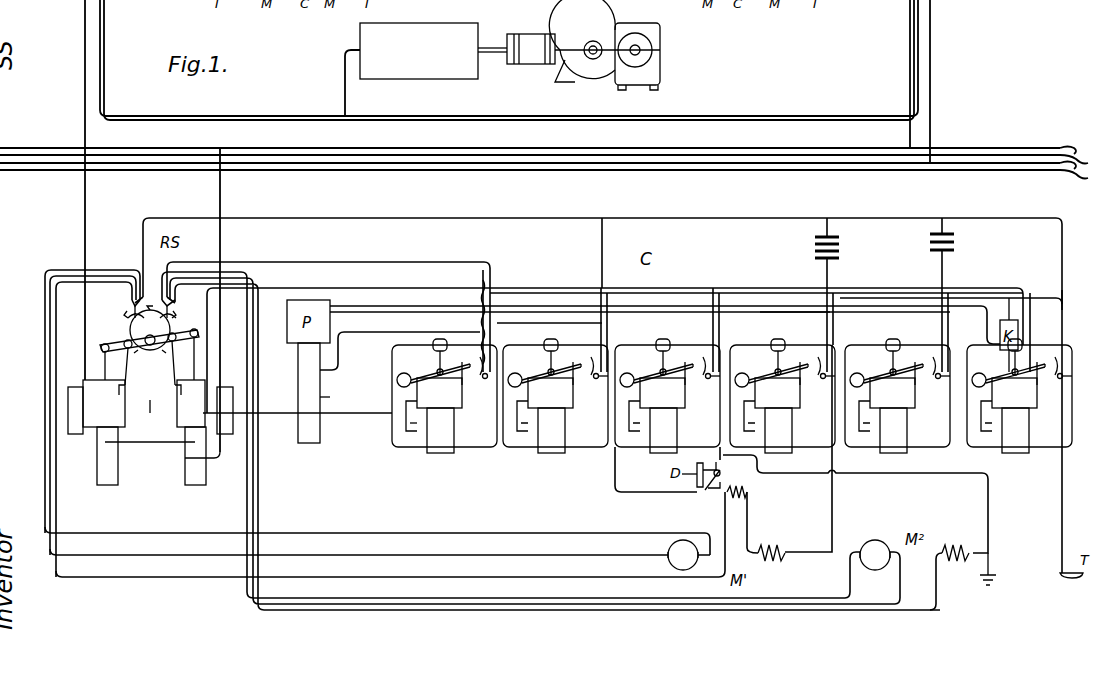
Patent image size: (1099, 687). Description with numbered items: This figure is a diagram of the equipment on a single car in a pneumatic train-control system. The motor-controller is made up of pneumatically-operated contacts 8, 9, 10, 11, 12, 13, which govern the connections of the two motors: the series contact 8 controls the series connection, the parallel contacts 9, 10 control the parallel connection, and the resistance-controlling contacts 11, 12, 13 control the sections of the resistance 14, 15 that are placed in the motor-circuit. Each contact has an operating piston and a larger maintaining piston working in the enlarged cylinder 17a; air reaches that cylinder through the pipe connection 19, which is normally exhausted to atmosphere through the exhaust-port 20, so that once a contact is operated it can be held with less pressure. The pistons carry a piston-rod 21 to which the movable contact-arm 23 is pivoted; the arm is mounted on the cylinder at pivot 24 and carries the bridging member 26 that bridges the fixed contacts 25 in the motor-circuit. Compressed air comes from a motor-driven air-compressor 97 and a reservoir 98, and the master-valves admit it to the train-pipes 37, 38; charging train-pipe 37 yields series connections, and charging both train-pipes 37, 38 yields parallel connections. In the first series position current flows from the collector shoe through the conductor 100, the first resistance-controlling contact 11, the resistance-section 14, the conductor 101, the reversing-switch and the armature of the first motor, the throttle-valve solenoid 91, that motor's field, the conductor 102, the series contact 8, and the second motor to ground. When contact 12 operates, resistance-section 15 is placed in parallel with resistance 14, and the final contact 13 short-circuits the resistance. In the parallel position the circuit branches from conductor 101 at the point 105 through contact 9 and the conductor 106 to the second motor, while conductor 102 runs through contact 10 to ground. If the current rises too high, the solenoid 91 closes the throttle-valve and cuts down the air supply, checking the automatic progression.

The series contact 8 is at (429, 376).
The parallel contact 9 is at (555, 396).
The parallel contact 10 is at (667, 396).
The first resistance-controlling contact 11 is at (782, 396).
The resistance-controlling contact 12 is at (897, 396).
The final resistance-controlling contact 13 is at (1019, 396).
The resistance-section 14 is at (840, 247).
The resistance-section 15 is at (955, 244).
The enlarged cylinder 17a is at (452, 410).
The pipe connection 19 is at (405, 425).
The exhaust-port 20 is at (414, 426).
The piston-rod 21 is at (430, 365).
The movable contact-arm 23 is at (446, 357).
The pivot 24 is at (462, 387).
The fixed contacts 25 is at (486, 379).
The bridging member 26 is at (480, 334).
The train-pipe 37 is at (538, 170).
The train-pipe 38 is at (538, 148).
The throttle-valve solenoid 91 is at (749, 493).
The motor-driven air-compressor 97 is at (598, 35).
The reservoir 98 is at (419, 51).
The conductor 100 is at (1058, 297).
The conductor 101 is at (722, 218).
The conductor 102 is at (792, 312).
The branch point 105 is at (613, 243).
The conductor 106 is at (404, 262).